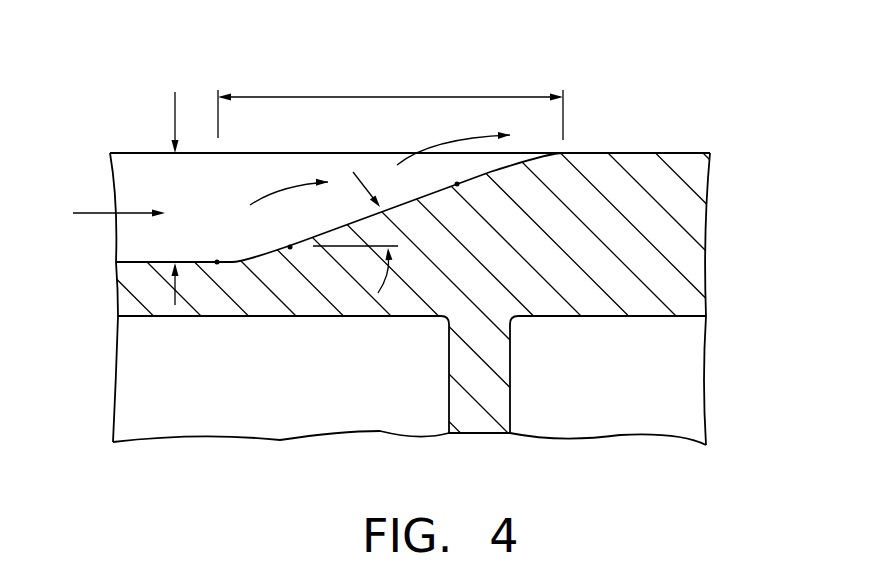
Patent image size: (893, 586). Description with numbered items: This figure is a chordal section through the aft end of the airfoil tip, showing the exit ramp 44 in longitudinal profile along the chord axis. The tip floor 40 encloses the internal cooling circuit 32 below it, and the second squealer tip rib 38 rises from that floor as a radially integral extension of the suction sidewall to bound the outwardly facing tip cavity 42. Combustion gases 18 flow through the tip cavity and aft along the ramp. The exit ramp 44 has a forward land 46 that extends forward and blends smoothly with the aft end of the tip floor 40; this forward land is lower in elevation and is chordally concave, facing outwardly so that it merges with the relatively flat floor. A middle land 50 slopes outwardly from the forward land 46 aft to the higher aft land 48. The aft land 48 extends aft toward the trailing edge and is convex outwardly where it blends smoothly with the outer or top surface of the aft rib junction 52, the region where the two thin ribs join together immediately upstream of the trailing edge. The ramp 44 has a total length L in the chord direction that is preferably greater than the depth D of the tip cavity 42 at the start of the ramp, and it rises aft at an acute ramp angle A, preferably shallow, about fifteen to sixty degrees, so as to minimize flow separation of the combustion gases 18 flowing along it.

The combustion gases 18 is at (97, 215).
The internal cooling circuit 32 is at (298, 373).
The second squealer tip rib 38 is at (110, 171).
The tip floor 40 is at (118, 294).
The tip cavity 42 is at (202, 198).
The exit ramp 44 is at (370, 155).
The forward land 46 is at (258, 257).
The aft land 48 is at (497, 178).
The middle land 50 is at (360, 214).
The aft rib junction 52 is at (628, 153).
The depth of the tip cavity D is at (175, 109).
The total length of the ramp L is at (386, 96).
The ramp angle A is at (381, 288).